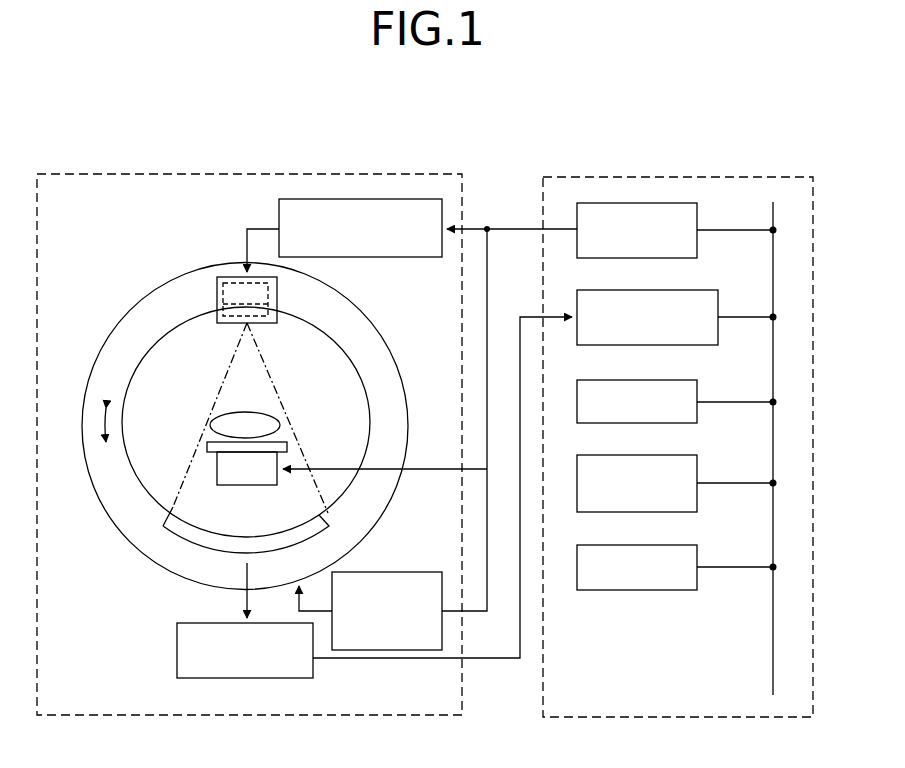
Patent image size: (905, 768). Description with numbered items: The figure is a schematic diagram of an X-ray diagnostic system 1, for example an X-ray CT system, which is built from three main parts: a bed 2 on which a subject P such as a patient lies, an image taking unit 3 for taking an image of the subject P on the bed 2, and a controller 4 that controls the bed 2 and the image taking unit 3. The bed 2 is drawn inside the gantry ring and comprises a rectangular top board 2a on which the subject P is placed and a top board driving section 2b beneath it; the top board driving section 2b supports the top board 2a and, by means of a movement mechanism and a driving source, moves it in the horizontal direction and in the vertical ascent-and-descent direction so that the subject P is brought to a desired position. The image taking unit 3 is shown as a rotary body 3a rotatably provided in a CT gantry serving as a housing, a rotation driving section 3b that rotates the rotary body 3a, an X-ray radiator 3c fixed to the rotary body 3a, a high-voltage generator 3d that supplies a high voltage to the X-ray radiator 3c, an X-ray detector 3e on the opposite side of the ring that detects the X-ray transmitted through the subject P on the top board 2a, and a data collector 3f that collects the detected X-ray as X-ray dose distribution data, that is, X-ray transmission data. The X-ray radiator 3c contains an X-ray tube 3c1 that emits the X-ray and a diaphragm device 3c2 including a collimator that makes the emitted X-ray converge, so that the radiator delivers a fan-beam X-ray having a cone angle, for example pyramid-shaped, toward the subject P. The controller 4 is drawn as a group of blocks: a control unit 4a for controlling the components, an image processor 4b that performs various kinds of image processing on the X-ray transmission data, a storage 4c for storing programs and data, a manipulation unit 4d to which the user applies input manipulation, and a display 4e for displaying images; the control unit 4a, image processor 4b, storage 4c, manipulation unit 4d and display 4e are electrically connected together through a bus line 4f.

The X-ray diagnostic system 1 is at (520, 144).
The bed 2 is at (217, 469).
The top board 2a is at (228, 453).
The top board driving section 2b is at (247, 485).
The image taking unit 3 is at (254, 174).
The rotary body 3a is at (113, 338).
The rotation driving section 3b is at (398, 572).
The X-ray radiator 3c is at (239, 355).
The X-ray tube 3c1 is at (237, 277).
The diaphragm device 3c2 is at (225, 326).
The high-voltage generator 3d is at (279, 212).
The X-ray detector 3e is at (188, 547).
The data collector 3f is at (177, 655).
The controller 4 is at (682, 176).
The control unit 4a is at (697, 222).
The image processor 4b is at (718, 305).
The storage 4c is at (697, 390).
The manipulation unit 4d is at (697, 473).
The display 4e is at (697, 555).
The bus line 4f is at (773, 642).
The subject P is at (225, 425).